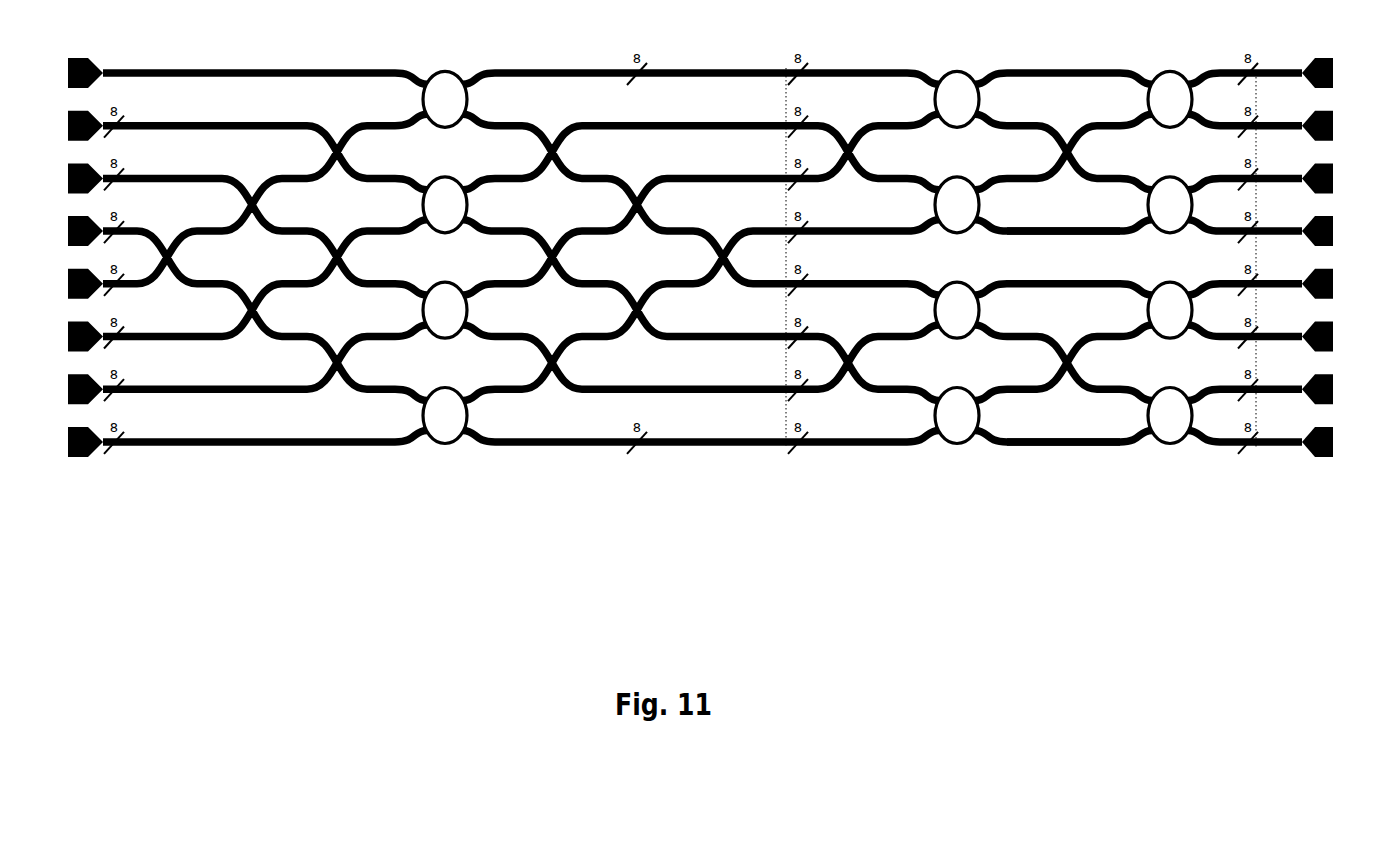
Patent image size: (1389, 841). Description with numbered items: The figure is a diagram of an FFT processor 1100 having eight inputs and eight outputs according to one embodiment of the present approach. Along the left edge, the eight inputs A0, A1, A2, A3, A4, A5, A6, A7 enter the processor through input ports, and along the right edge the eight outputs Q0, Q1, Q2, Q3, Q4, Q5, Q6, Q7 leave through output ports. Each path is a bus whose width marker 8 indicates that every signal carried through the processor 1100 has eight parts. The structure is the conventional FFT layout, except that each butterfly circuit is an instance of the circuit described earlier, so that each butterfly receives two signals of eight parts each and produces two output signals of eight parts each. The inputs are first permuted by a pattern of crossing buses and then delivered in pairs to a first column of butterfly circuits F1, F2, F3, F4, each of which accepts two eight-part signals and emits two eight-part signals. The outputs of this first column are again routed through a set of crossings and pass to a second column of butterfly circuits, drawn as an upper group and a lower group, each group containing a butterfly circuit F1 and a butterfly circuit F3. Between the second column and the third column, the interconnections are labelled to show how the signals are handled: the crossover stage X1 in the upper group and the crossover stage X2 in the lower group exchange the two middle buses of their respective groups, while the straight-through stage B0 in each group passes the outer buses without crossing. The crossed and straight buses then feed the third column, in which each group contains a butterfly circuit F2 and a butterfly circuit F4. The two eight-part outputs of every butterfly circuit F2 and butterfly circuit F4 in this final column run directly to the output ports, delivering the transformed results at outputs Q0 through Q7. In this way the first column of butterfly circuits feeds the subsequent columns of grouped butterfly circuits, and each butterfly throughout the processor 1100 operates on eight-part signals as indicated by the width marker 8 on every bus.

The FFT processor 1100 is at (700, 305).
The 8-part signal width 8 is at (249, 68).
The butterfly circuit F1 is at (701, 204).
The butterfly circuit F2 is at (807, 204).
The butterfly circuit F3 is at (701, 310).
The butterfly circuit F4 is at (807, 310).
The crossover stage X1 is at (1063, 134).
The crossover stage X2 is at (1063, 345).
The straight-through stage B0 is at (1063, 318).
The input A0 is at (65, 73).
The input A1 is at (65, 126).
The input A2 is at (65, 178).
The input A3 is at (65, 231).
The input A4 is at (65, 284).
The input A5 is at (65, 337).
The input A6 is at (65, 389).
The input A7 is at (65, 442).
The output Q0 is at (1337, 73).
The output Q1 is at (1337, 126).
The output Q2 is at (1337, 178).
The output Q3 is at (1337, 231).
The output Q4 is at (1337, 284).
The output Q5 is at (1337, 337).
The output Q6 is at (1337, 389).
The output Q7 is at (1337, 442).